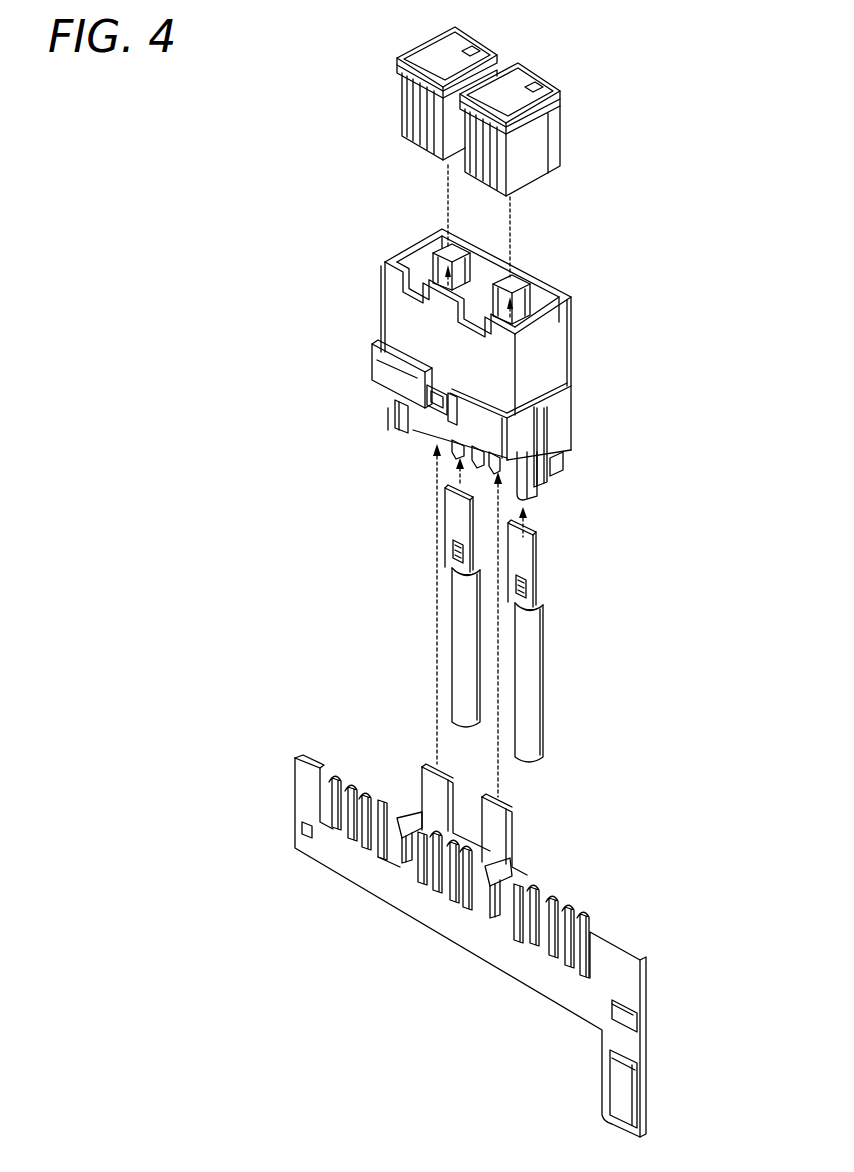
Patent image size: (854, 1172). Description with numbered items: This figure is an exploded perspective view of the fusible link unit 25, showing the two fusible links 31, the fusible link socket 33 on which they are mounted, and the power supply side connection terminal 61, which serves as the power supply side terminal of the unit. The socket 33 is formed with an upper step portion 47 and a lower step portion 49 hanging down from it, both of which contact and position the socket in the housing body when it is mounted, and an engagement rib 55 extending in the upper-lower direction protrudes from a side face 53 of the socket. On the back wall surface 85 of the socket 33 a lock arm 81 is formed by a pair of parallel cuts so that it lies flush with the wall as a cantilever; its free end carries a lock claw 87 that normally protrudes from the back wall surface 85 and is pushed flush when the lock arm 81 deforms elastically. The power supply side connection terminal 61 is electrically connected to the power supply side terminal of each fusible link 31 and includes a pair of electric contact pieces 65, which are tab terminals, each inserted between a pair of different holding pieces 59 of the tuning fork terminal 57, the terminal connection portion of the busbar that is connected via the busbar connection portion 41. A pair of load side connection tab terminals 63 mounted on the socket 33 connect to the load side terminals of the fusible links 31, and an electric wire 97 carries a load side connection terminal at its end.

The fusible link unit 25 is at (645, 203).
The fusible link 31 is at (468, 44).
The fusible link socket 33 is at (570, 343).
The busbar connection portion 41 is at (632, 1100).
The upper step portion 47 is at (432, 437).
The lower step portion 49 is at (554, 473).
The side face 53 is at (559, 414).
The engagement rib 55 is at (538, 494).
The tuning fork terminal 57 is at (282, 784).
The holding piece 59 is at (347, 782).
The power supply side connection terminal 61 is at (526, 824).
The load side connection tab terminal 63 is at (518, 552).
The electric contact piece 65 is at (407, 870).
The lock arm 81 is at (436, 386).
The back wall surface 85 is at (484, 428).
The lock claw 87 is at (371, 368).
The electric wire 97 is at (541, 681).